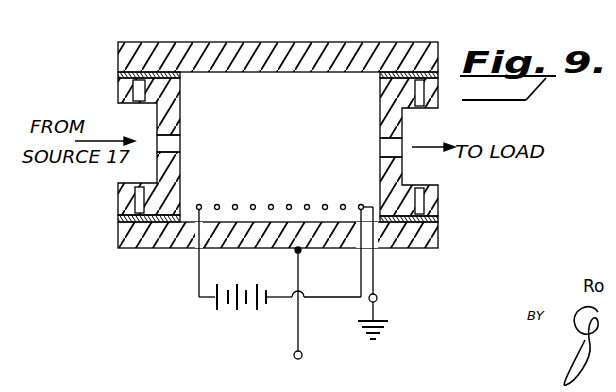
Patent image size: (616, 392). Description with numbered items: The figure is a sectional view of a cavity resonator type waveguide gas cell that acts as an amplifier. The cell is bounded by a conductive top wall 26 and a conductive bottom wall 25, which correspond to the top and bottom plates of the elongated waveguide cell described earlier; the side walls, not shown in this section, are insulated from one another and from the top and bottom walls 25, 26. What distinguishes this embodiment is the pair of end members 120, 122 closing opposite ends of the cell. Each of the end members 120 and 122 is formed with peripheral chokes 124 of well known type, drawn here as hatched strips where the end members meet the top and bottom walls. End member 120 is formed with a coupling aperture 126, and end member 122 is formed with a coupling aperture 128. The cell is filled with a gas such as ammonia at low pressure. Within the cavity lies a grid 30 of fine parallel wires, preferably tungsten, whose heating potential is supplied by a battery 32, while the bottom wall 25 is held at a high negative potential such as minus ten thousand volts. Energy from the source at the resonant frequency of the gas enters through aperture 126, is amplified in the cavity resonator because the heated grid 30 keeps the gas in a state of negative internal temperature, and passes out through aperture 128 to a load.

The top wall 26 is at (303, 48).
The end member 120 is at (180, 92).
The end member 122 is at (380, 95).
The peripheral chokes 124 is at (118, 84).
The coupling aperture 126 is at (180, 141).
The coupling aperture 128 is at (380, 150).
The grid 30 is at (306, 172).
The battery 32 is at (259, 270).
The bottom wall 25 is at (301, 254).